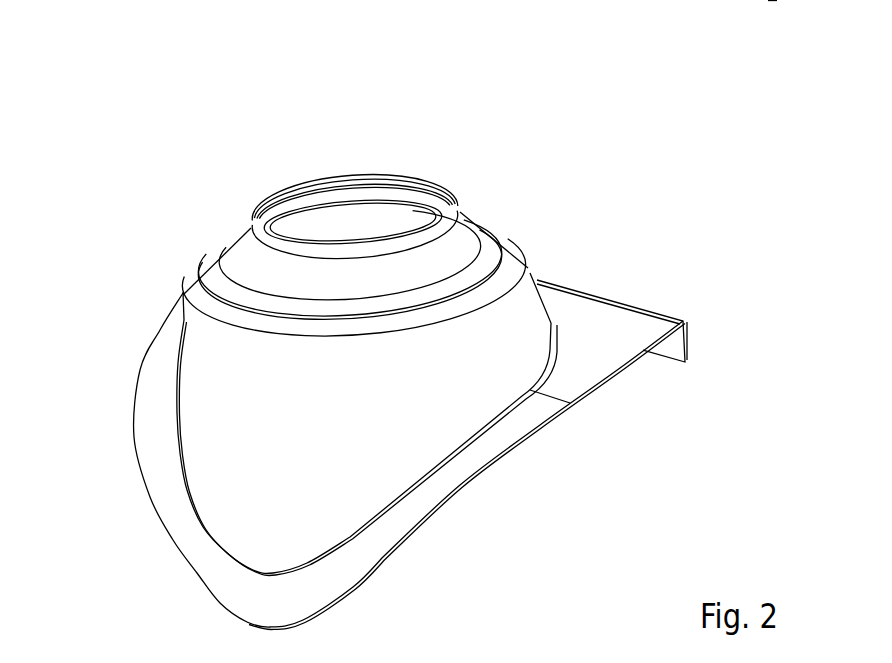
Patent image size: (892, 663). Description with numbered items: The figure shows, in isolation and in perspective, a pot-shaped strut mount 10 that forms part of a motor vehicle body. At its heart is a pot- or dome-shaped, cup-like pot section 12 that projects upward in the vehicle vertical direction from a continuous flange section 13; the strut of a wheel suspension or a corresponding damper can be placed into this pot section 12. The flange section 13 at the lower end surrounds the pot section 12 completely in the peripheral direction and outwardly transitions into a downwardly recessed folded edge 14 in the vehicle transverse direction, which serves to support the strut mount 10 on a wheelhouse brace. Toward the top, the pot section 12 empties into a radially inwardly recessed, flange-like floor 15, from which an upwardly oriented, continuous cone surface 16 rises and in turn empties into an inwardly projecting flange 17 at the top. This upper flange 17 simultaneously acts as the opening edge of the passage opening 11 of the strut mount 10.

The strut mount 10 is at (325, 115).
The passage opening 11 is at (363, 203).
The pot section 12 is at (528, 268).
The flange section 13 is at (153, 370).
The folded edge 14 is at (677, 348).
The floor 15 is at (493, 243).
The cone surface 16 is at (465, 233).
The flange 17 is at (433, 205).